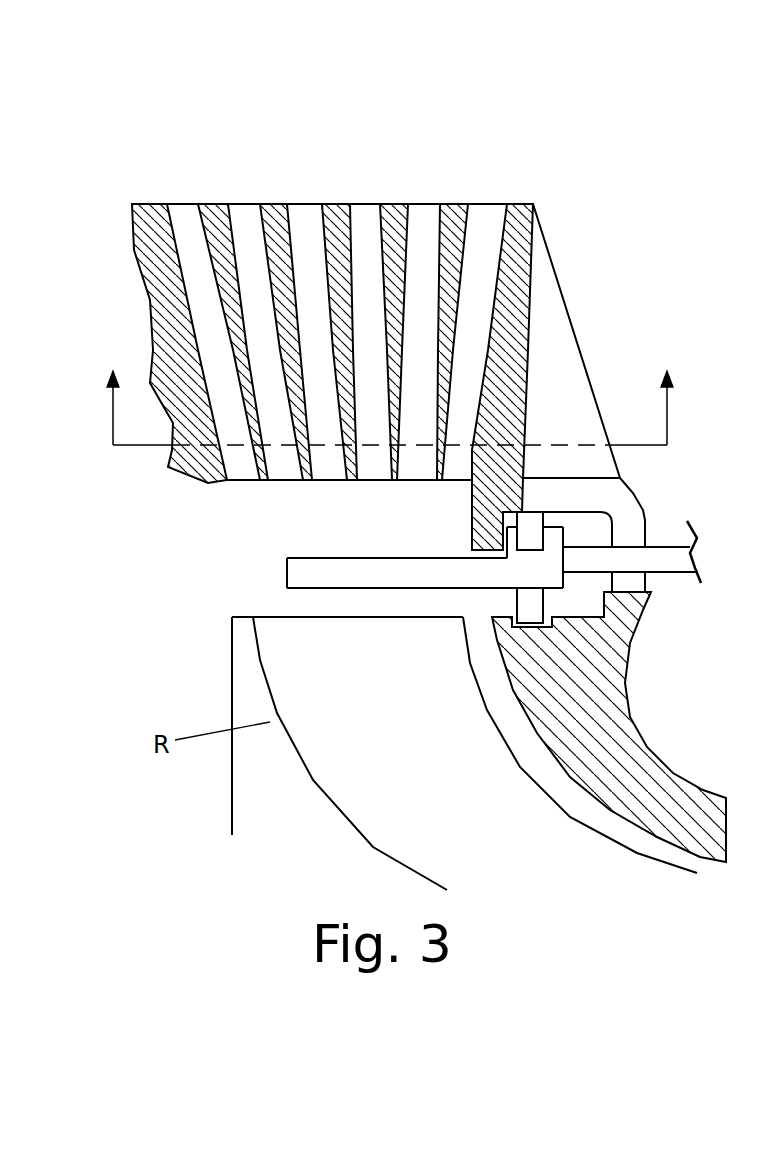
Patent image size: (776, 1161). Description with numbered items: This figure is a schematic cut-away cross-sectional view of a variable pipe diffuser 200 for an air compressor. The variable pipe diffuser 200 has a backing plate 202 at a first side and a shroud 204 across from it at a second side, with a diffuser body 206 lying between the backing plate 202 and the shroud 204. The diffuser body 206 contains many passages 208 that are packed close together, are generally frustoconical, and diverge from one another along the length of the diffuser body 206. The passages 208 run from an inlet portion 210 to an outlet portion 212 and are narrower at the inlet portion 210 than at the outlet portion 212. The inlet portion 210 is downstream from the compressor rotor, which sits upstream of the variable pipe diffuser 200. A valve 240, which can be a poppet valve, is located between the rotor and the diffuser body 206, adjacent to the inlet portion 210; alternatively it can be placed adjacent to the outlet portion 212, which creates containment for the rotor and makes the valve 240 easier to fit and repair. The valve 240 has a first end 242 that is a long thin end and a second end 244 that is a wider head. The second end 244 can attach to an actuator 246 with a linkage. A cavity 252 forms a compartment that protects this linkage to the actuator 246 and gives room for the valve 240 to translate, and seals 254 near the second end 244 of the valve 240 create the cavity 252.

The variable pipe diffuser 200 is at (648, 146).
The backing plate 202 is at (152, 247).
The shroud 204 is at (523, 230).
The diffuser body 206 is at (432, 168).
The passages 208 is at (240, 212).
The inlet portion 210 is at (447, 482).
The outlet portion 212 is at (322, 203).
The valve 240 is at (430, 578).
The first end 242 is at (287, 572).
The second end 244 is at (565, 578).
The actuator 246 is at (667, 562).
The cavity 252 is at (595, 532).
The seals 254 is at (533, 525).